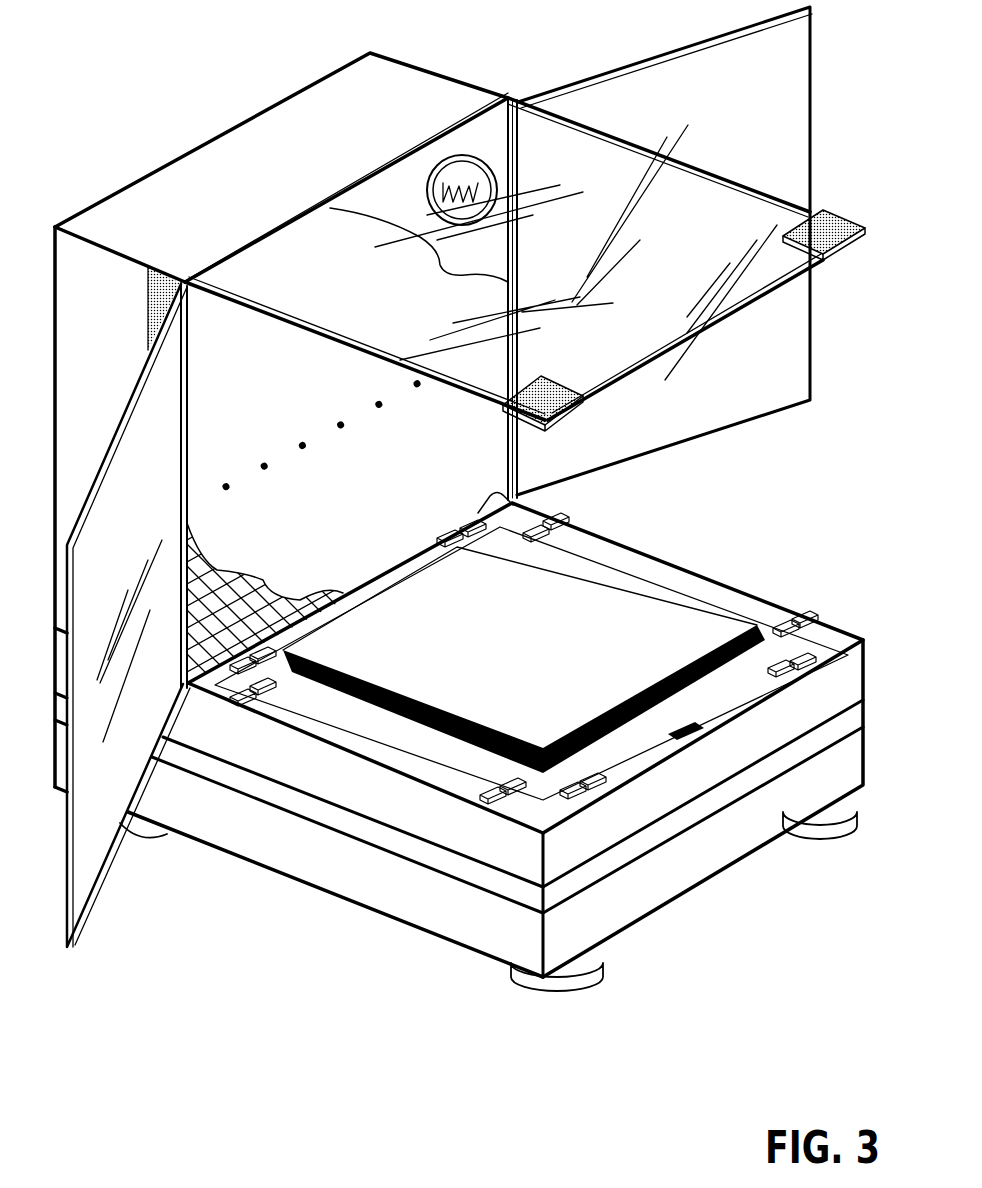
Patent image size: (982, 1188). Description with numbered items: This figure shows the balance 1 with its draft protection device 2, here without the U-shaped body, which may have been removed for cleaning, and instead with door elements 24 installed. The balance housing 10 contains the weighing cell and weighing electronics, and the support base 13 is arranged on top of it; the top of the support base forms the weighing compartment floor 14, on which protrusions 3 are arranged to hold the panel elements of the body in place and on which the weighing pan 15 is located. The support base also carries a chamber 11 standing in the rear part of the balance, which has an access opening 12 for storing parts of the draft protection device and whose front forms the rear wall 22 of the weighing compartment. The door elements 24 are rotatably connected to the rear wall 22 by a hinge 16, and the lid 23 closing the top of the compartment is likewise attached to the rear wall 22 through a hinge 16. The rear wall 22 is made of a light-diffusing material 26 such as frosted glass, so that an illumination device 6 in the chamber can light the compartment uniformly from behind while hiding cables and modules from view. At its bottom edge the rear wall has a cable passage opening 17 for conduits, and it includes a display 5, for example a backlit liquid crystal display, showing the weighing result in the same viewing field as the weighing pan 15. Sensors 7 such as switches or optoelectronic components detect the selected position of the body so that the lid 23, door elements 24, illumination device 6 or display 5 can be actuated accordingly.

The balance 1 is at (365, 955).
The draft protection device 2 is at (182, 105).
The protrusions 3 is at (800, 613).
The display 5 is at (337, 438).
The illumination device 6 is at (467, 155).
The sensors 7 is at (680, 727).
The balance housing 10 is at (373, 862).
The chamber 11 is at (168, 193).
The access opening 12 is at (160, 285).
The support base 13 is at (302, 777).
The weighing compartment floor 14 is at (410, 752).
The weighing pan 15 is at (547, 720).
The hinge 16 is at (187, 340).
The cable passage opening 17 is at (515, 494).
The rear wall 22 is at (405, 512).
The lid 23 is at (595, 167).
The door elements 24 is at (150, 448).
The light-diffusing material 26 is at (247, 607).